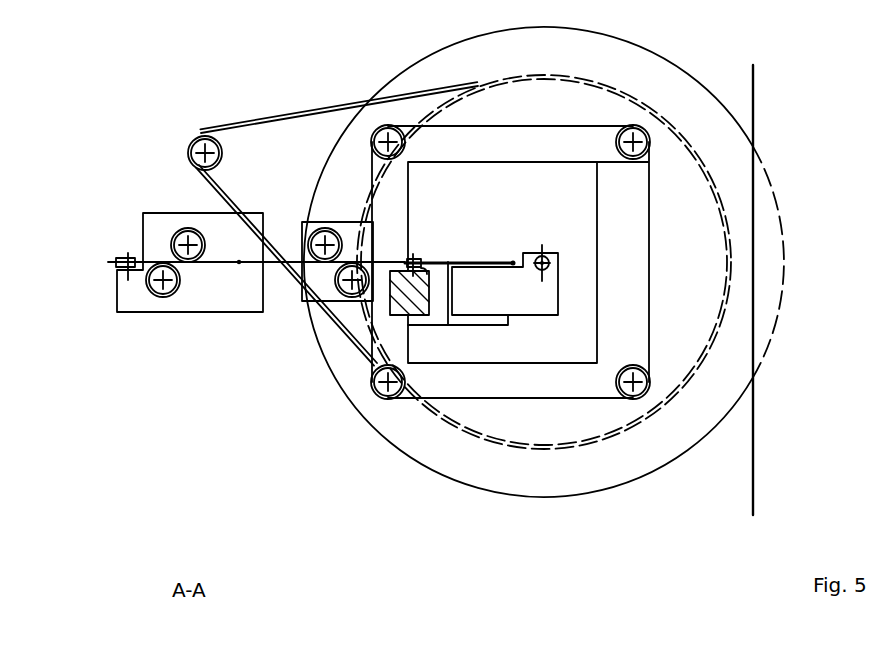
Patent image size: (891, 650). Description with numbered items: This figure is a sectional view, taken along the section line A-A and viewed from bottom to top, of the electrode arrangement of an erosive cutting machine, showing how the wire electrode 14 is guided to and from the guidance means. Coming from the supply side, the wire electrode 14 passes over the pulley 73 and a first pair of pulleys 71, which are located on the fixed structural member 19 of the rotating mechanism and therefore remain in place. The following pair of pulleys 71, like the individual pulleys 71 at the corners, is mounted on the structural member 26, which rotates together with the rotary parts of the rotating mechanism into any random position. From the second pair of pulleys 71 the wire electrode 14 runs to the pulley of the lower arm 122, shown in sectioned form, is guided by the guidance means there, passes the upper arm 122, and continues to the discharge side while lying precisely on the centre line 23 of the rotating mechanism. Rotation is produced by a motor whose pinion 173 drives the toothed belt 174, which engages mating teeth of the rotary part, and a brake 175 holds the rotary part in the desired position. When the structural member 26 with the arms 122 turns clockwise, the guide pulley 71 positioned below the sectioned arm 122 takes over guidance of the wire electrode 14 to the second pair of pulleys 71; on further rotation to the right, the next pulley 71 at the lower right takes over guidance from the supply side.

The wire electrode 14 is at (239, 265).
The fixed structural member 19 is at (158, 222).
The centre line 23 is at (550, 257).
The structural member 26 is at (641, 312).
The guide pulleys 71 is at (197, 268).
The pulley 73 is at (120, 258).
The arm 122 is at (420, 262).
The pinion 173 is at (222, 155).
The toothed belt 174 is at (290, 117).
The brake 175 is at (777, 262).